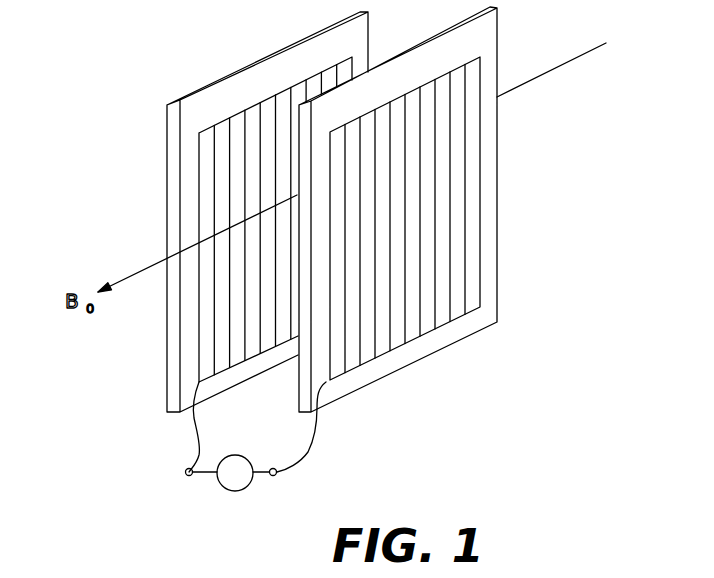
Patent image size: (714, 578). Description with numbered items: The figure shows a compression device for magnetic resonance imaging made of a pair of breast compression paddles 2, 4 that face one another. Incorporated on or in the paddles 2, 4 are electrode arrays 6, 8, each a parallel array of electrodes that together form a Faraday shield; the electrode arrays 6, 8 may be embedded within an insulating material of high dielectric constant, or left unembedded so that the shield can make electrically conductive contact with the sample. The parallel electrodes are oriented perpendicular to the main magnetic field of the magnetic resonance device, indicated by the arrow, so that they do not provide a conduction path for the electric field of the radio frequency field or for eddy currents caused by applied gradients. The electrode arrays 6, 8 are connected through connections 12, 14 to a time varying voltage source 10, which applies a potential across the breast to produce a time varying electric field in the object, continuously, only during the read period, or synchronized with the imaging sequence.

The breast compression paddle 2 is at (488, 182).
The breast compression paddle 4 is at (195, 115).
The electrode array 6 is at (212, 176).
The electrode array 8 is at (465, 223).
The time varying voltage source 10 is at (249, 484).
The connection 12 is at (195, 432).
The connection 14 is at (318, 437).